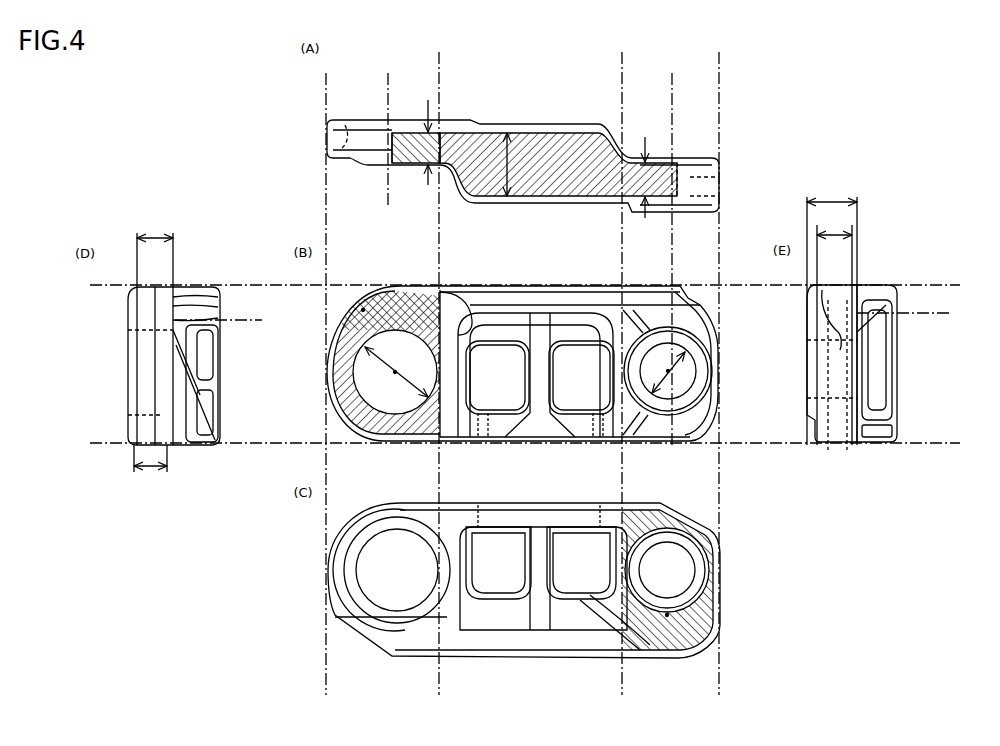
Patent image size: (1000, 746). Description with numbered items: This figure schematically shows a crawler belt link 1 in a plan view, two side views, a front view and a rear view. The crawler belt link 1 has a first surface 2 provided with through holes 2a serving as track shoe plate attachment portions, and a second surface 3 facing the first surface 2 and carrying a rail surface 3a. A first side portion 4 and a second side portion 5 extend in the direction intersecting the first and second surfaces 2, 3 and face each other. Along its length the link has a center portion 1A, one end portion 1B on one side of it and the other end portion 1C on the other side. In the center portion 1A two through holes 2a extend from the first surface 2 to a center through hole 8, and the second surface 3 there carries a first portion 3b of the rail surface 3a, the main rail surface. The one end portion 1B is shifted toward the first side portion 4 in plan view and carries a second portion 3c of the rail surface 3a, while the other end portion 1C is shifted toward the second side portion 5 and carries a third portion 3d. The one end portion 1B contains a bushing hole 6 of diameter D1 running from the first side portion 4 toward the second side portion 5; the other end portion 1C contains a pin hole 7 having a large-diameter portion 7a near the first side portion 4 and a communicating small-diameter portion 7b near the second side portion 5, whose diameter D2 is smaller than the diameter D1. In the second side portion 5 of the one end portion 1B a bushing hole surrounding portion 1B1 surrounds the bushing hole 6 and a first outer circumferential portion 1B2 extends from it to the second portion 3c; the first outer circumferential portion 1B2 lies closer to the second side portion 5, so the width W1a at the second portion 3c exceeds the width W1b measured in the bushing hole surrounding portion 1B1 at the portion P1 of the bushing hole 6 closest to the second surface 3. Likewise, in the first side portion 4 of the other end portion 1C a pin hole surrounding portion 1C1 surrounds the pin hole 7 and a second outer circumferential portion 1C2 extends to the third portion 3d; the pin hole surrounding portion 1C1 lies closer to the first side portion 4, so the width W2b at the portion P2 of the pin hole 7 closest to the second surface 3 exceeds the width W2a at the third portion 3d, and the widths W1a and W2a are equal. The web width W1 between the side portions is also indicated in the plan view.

The crawler belt link 1 is at (724, 150).
The center portion 1A is at (622, 63).
The one end portion 1B is at (439, 63).
The other end portion 1C is at (622, 63).
The bushing hole surrounding portion 1B1 is at (352, 440).
The first outer circumferential portion 1B2 is at (382, 300).
The pin hole surrounding portion 1C1 is at (718, 540).
The second outer circumferential portion 1C2 is at (690, 645).
The first surface 2 is at (640, 438).
The through hole 2a is at (475, 447).
The second surface 3 is at (565, 186).
The rail surface 3a is at (610, 84).
The first portion of rail surface 3b is at (528, 150).
The second portion of rail surface 3c is at (445, 150).
The third portion of rail surface 3d is at (612, 160).
The first side portion 4 is at (555, 123).
The second side portion 5 is at (545, 204).
The bushing hole 6 is at (347, 133).
The pin hole 7 is at (760, 168).
The large-diameter portion 7a is at (716, 177).
The small-diameter portion 7b is at (716, 196).
The center through hole 8 is at (456, 438).
The diameter of bushing hole D1 is at (396, 375).
The diameter of small-diameter portion D2 is at (690, 378).
The portion of bushing hole located closest to second surface P1 is at (363, 310).
The portion of pin hole located closest to second surface P2 is at (670, 615).
The web width W1 is at (500, 198).
The width W1a is at (290, 263).
The width W1b is at (151, 466).
The width W2a is at (740, 282).
The width W2b is at (832, 315).